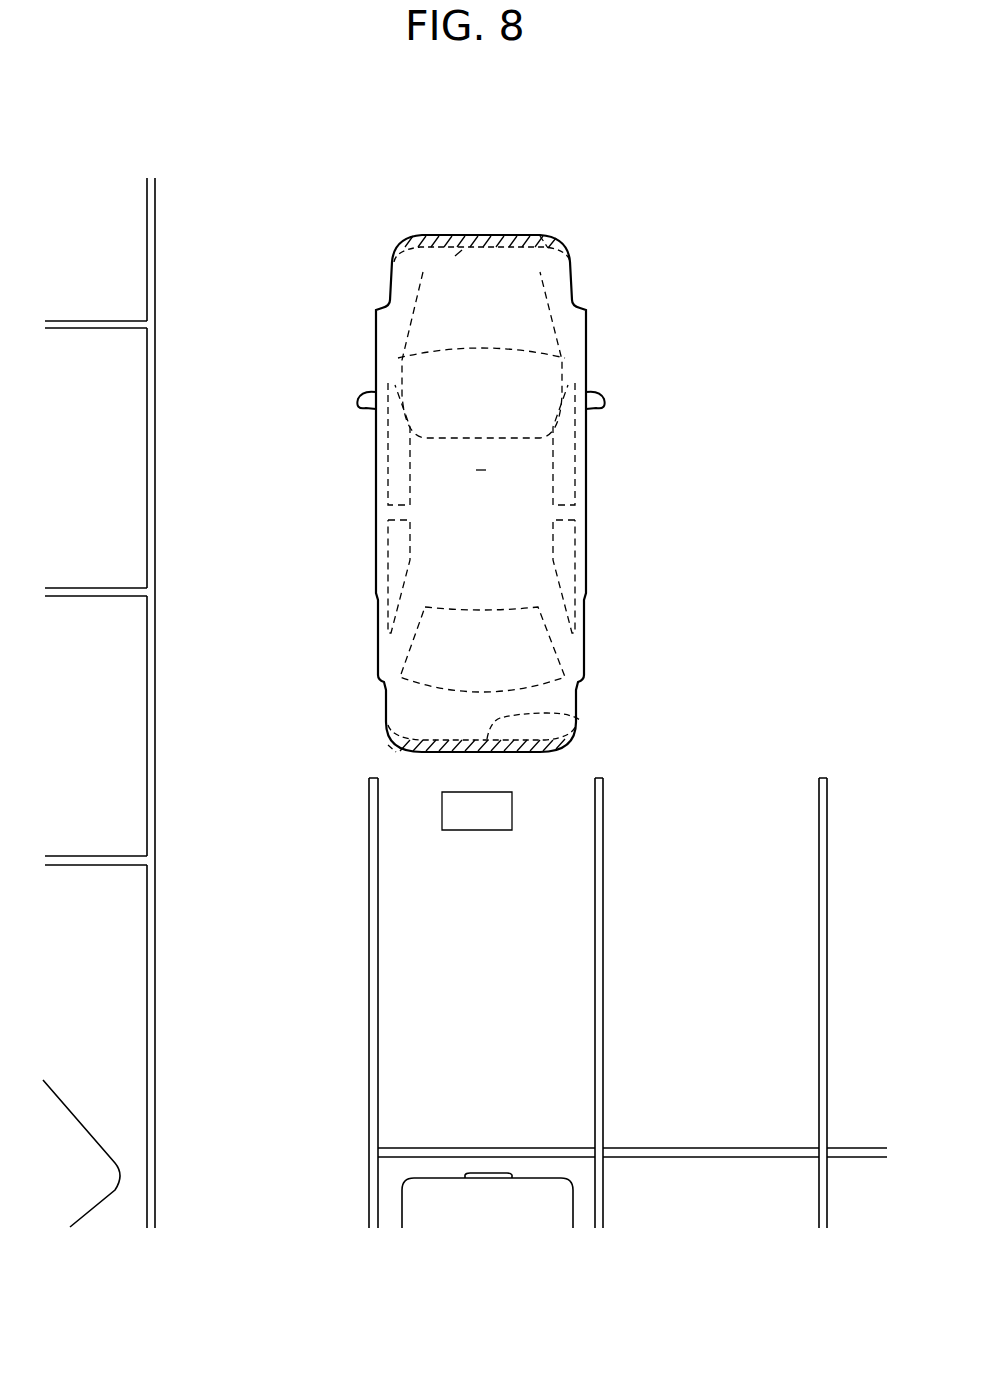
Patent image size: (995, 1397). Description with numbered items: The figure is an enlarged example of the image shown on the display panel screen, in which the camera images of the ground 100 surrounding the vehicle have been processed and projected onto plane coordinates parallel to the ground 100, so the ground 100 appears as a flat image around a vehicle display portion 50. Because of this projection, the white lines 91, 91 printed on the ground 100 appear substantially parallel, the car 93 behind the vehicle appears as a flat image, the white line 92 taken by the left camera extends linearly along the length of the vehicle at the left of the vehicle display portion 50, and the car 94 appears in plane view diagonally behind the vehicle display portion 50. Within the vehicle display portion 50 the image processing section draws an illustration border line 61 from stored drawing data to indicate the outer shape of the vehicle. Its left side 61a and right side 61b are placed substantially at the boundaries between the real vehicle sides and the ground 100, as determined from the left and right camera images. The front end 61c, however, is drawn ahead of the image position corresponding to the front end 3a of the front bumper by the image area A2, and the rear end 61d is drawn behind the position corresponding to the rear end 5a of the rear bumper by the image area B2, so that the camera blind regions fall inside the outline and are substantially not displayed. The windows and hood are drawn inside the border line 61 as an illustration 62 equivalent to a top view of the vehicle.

The vehicle display portion 50 is at (600, 492).
The illustration border line 61 is at (587, 352).
The left side of the illustration border line 61a is at (377, 524).
The right side of the illustration border line 61b is at (587, 525).
The front end of the illustration border line 61c is at (510, 236).
The rear end of the illustration border line 61d is at (430, 754).
The illustration 62 is at (526, 471).
The front end of the front bumper 3a is at (455, 254).
The rear end of the rear bumper 5a is at (584, 719).
The image area forward of the front bumper A2 is at (545, 235).
The image area behind the rear bumper B2 is at (388, 746).
The white lines 91 is at (368, 889).
The white line 92 is at (156, 648).
The car 93 is at (438, 1215).
The car 94 is at (55, 1135).
The ground 100 is at (729, 744).